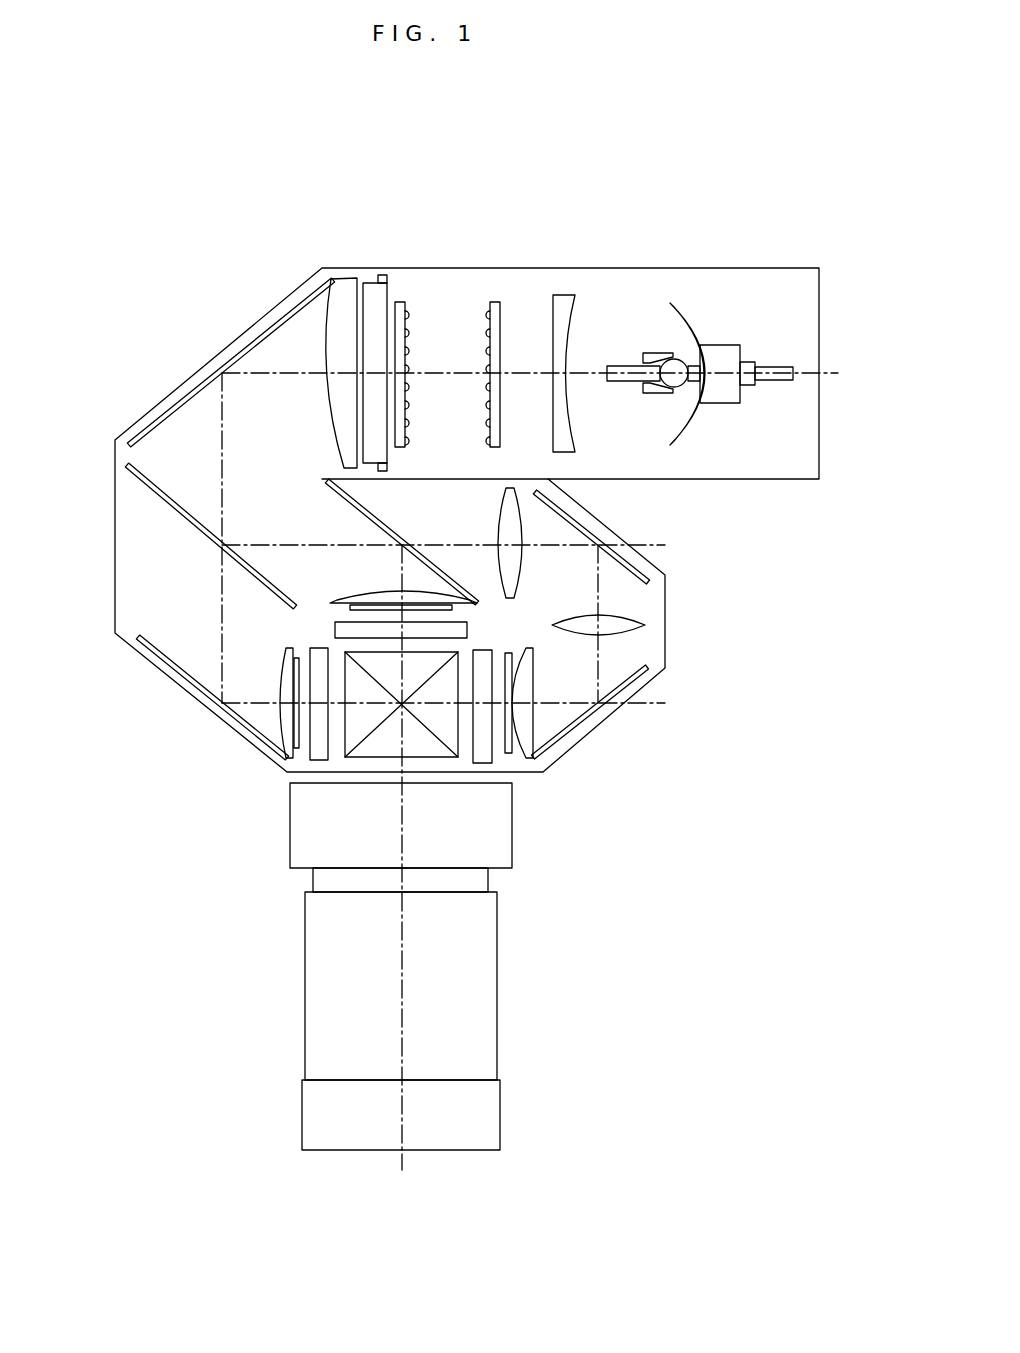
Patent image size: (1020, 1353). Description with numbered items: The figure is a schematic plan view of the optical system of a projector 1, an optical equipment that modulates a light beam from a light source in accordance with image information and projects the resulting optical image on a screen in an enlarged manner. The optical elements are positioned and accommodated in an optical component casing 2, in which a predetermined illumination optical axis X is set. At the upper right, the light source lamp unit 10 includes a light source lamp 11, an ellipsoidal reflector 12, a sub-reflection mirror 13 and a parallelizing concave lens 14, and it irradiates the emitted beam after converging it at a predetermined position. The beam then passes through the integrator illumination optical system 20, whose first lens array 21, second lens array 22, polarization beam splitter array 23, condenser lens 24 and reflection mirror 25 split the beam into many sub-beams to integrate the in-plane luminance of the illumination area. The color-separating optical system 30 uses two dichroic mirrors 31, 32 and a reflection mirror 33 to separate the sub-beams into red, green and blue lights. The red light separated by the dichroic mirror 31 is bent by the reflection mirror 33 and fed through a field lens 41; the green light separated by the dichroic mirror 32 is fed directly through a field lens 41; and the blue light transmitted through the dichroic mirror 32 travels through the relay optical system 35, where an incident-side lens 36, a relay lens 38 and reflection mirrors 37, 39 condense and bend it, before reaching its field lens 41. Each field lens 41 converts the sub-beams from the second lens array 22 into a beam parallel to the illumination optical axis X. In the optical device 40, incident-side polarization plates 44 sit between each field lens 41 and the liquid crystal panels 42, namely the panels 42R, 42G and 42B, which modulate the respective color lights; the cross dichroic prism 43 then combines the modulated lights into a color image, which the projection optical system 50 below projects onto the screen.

The projector 1 is at (703, 907).
The optical component casing 2 is at (605, 723).
The light source lamp unit 10 is at (718, 303).
The light source lamp 11 is at (678, 362).
The ellipsoidal reflector 12 is at (672, 303).
The sub-reflection mirror 13 is at (650, 353).
The parallelizing concave lens 14 is at (567, 297).
The integrator illumination optical system 20 is at (450, 325).
The first lens array 21 is at (495, 302).
The second lens array 22 is at (401, 302).
The polarization beam splitter array 23 is at (375, 283).
The condenser lens 24 is at (352, 279).
The reflection mirror 25 is at (235, 350).
The color-separating optical system 30 is at (168, 577).
The dichroic mirror 31 is at (163, 505).
The dichroic mirror 32 is at (348, 501).
The reflection mirror 33 is at (185, 683).
The relay optical system 35 is at (630, 645).
The incident-side lens 36 is at (515, 528).
The reflection mirror 37 is at (633, 568).
The relay lens 38 is at (642, 625).
The reflection mirror 39 is at (642, 688).
The optical device 40 is at (302, 760).
The field lens 41 is at (378, 592).
The liquid crystal panel 42 is at (413, 749).
The liquid crystal panel 42R is at (320, 761).
The liquid crystal panel 42G is at (467, 632).
The liquid crystal panel 42B is at (485, 763).
The cross dichroic prism 43 is at (438, 755).
The incident-side polarization plate 44 is at (352, 607).
The projection optical system 50 is at (532, 1002).
The illumination optical axis X is at (222, 462).